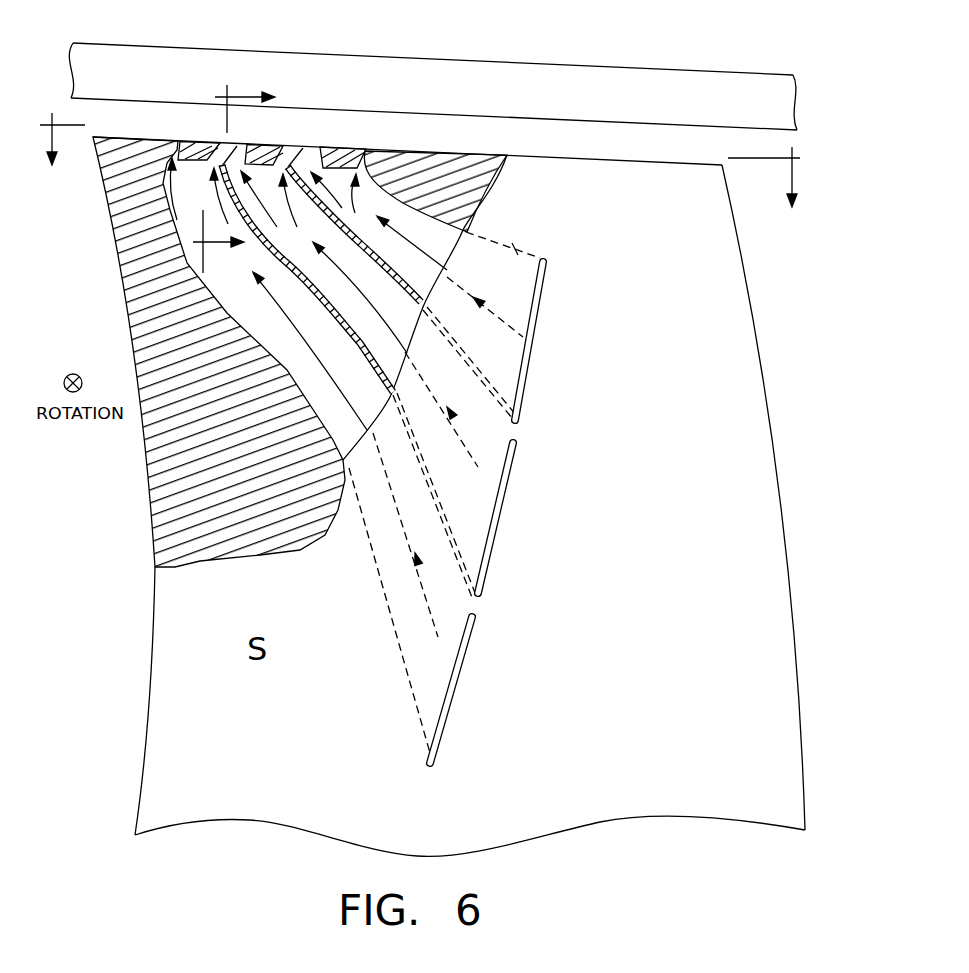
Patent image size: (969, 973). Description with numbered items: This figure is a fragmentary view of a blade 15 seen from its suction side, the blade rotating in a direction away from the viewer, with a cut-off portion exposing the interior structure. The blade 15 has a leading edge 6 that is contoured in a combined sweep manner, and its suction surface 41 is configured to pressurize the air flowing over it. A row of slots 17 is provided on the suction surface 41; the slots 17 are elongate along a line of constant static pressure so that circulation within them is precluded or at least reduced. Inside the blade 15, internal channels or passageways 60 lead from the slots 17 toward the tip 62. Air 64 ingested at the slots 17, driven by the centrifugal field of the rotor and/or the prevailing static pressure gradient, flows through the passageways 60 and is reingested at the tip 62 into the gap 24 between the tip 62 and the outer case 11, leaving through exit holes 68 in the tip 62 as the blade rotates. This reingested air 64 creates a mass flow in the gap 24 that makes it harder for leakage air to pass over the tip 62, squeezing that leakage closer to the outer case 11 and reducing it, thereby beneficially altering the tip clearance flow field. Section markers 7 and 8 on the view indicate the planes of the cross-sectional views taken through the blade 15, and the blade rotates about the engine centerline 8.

The outer case 11 is at (488, 57).
The gap 24 is at (717, 145).
The tip 62 is at (430, 152).
The exit holes 68 is at (190, 140).
The internal channels or passageways 60 is at (515, 250).
The air 64 is at (502, 320).
The slots 17 is at (543, 313).
The suction surface 41 is at (737, 373).
The leading edge 6 is at (150, 673).
The blade 15 is at (392, 822).
The section line 7- 7 is at (236, 169).
The centerline 8 is at (421, 176).